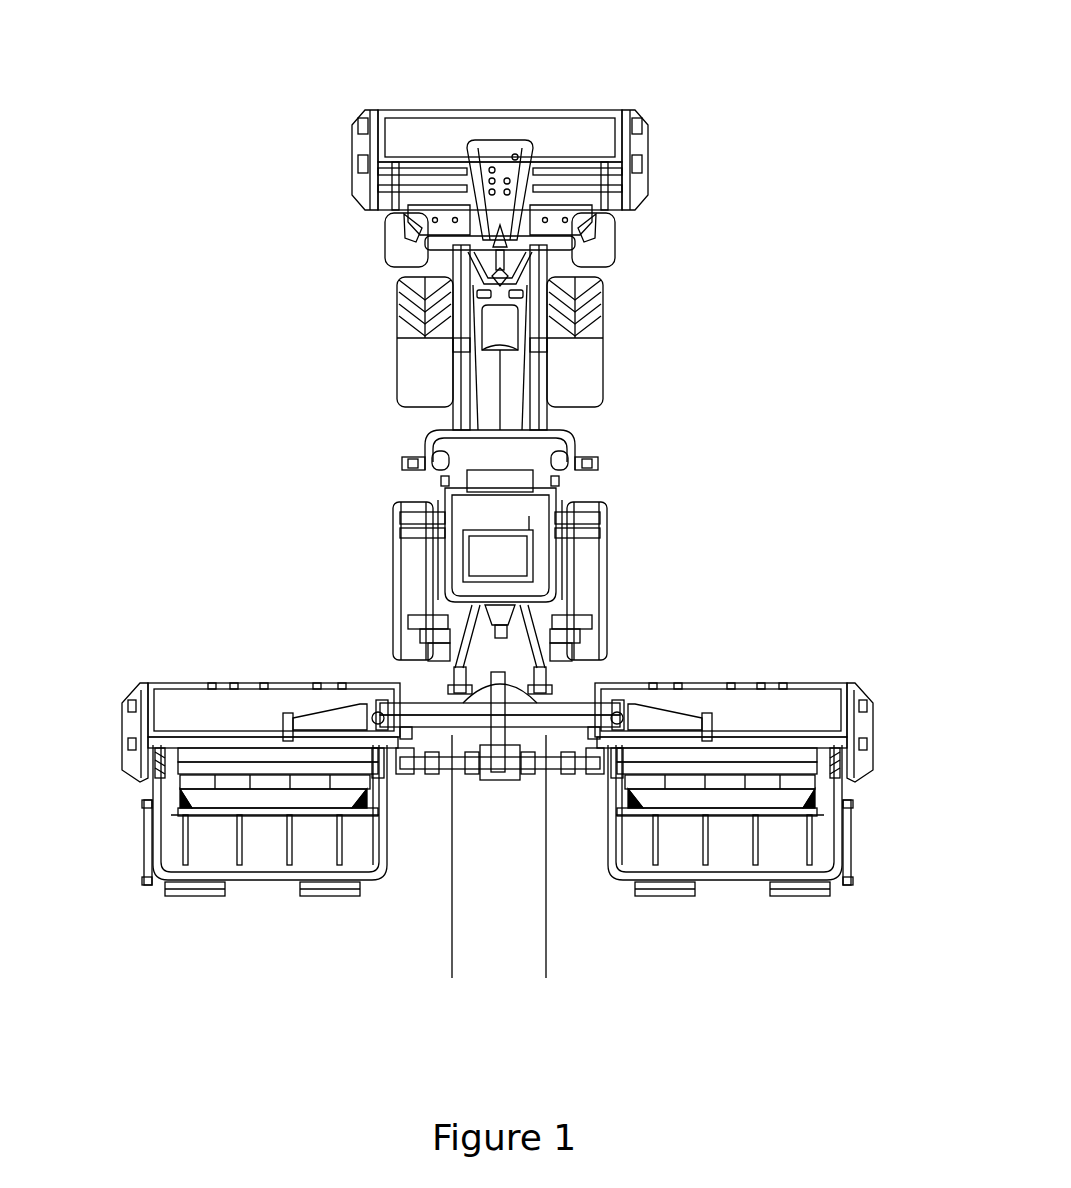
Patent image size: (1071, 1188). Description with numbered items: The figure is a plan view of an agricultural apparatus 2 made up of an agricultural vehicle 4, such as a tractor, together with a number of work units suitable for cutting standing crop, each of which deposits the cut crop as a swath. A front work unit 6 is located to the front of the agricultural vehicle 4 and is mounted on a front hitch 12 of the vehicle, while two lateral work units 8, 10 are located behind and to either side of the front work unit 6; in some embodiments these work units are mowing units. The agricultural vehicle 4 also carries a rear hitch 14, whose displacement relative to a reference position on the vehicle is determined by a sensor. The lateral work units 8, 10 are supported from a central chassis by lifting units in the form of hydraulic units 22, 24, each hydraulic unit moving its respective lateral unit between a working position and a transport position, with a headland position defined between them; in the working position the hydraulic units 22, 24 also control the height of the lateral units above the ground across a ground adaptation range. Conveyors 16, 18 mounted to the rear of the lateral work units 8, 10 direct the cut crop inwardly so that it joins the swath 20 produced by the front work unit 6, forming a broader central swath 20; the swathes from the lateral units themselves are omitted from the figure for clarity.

The agricultural apparatus 2 is at (696, 73).
The agricultural vehicle 4 is at (622, 420).
The front work unit 6 is at (676, 154).
The lateral work unit 8 is at (227, 695).
The lateral work unit 10 is at (740, 705).
The front hitch 12 is at (478, 258).
The rear hitch 14 is at (547, 691).
The conveyor 16 is at (175, 847).
The conveyor 18 is at (830, 845).
The swath 20 is at (531, 935).
The hydraulic unit 22 is at (567, 772).
The hydraulic unit 24 is at (432, 775).